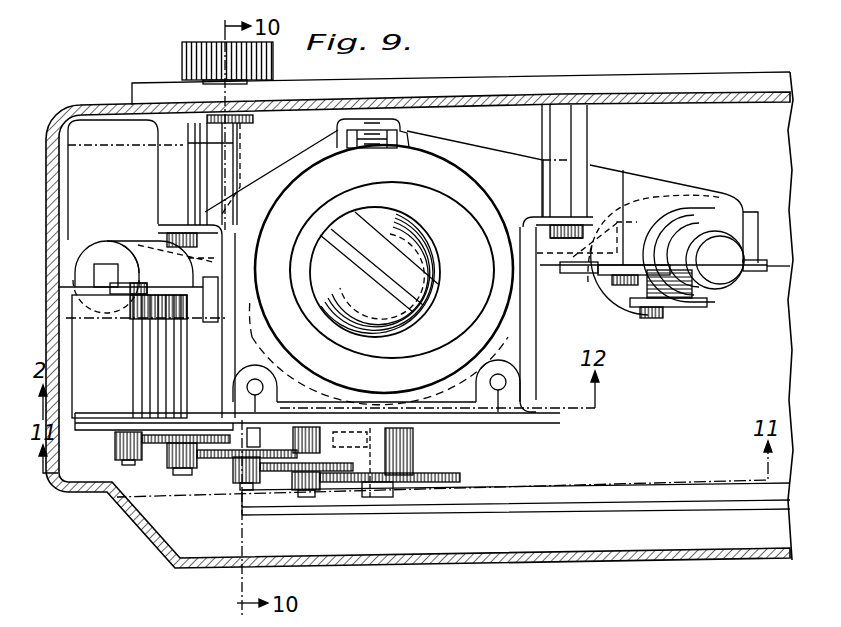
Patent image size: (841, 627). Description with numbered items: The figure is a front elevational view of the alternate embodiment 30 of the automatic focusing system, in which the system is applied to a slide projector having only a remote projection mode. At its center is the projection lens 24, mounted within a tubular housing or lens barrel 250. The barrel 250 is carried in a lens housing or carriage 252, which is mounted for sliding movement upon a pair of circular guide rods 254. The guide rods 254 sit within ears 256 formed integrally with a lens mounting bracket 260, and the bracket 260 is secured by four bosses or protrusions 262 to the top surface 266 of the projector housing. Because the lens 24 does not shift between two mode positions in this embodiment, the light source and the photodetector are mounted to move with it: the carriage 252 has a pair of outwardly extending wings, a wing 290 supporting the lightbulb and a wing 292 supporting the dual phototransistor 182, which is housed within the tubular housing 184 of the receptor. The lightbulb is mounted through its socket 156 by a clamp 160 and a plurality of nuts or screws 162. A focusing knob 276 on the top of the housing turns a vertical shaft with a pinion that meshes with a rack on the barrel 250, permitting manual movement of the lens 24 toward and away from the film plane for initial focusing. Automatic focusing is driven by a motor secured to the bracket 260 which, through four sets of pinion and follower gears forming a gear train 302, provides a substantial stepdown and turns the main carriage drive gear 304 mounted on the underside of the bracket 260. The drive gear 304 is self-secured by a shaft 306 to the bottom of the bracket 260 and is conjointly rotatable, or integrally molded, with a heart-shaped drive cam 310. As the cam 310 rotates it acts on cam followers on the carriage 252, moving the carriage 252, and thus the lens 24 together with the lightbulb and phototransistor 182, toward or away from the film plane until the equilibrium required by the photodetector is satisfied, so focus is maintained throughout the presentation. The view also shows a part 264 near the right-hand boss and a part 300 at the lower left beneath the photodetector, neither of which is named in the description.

The projection lens 24 is at (381, 245).
The alternate embodiment of the automatic focusing system 30 is at (496, 128).
The socket 156 is at (723, 277).
The clamp 160 is at (700, 307).
The nuts or screws 162 is at (618, 285).
The dual phototransistor 182 is at (137, 247).
The tubular housing 184 is at (243, 182).
The lens barrel 250 is at (486, 198).
The lens carriage 252 is at (510, 352).
The circular guide rods 254 is at (264, 386).
The ears 256 is at (290, 396).
The lens mounting bracket 260 is at (537, 390).
The bosses or protrusions 262 is at (170, 162).
The nut 264 is at (568, 238).
The top surface of the housing 266 is at (97, 108).
The focusing knob 276 is at (273, 66).
The wing for supporting the lightbulb 290 is at (640, 192).
The wing for supporting the photodetector 292 is at (158, 238).
The battery housing 300 is at (145, 347).
The gear train 302 is at (163, 484).
The carriage drive gear 304 is at (438, 485).
The shaft 306 is at (375, 500).
The heart-shaped drive cam 310 is at (413, 455).